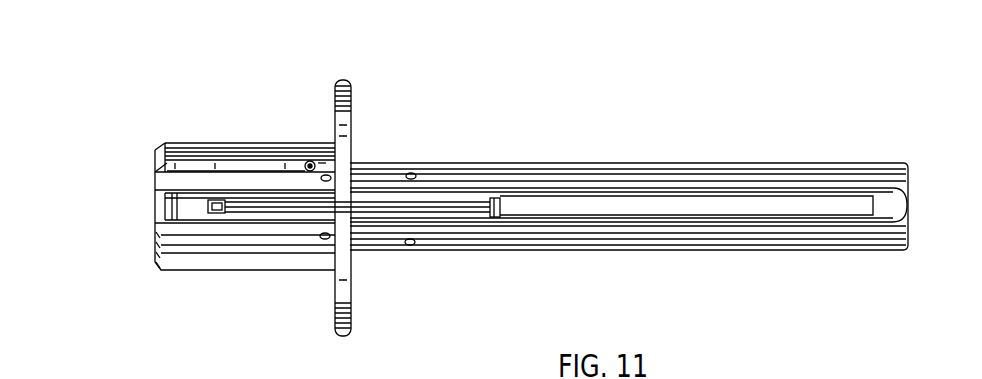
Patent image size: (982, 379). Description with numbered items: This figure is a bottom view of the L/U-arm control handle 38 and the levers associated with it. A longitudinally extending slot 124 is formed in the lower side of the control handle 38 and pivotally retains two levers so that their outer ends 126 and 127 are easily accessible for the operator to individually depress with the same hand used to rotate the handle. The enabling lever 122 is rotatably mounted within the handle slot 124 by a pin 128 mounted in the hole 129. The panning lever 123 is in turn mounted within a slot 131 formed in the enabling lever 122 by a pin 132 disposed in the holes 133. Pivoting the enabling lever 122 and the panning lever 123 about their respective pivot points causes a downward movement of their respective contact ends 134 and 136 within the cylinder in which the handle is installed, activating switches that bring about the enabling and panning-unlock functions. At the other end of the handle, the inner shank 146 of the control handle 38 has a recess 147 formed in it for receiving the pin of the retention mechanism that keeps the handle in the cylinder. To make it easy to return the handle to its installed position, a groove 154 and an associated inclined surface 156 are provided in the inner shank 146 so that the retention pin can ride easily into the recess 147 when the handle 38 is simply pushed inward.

The L/U-arm control handle 38 is at (653, 163).
The enabling lever 122 is at (568, 220).
The panning lever 123 is at (392, 214).
The longitudinally extending slot 124 is at (880, 193).
The outer end 126 is at (700, 200).
The outer end 127 is at (463, 208).
The pin 128 is at (413, 174).
The hole 129 is at (411, 245).
The slot 131 is at (501, 205).
The pin 132 is at (328, 176).
The holes 133 is at (325, 239).
The contact end 134 is at (172, 208).
The contact end 136 is at (224, 214).
The inner shank 146 is at (210, 147).
The recess 147 is at (308, 161).
The groove 154 is at (255, 160).
The inclined surface 156 is at (156, 152).